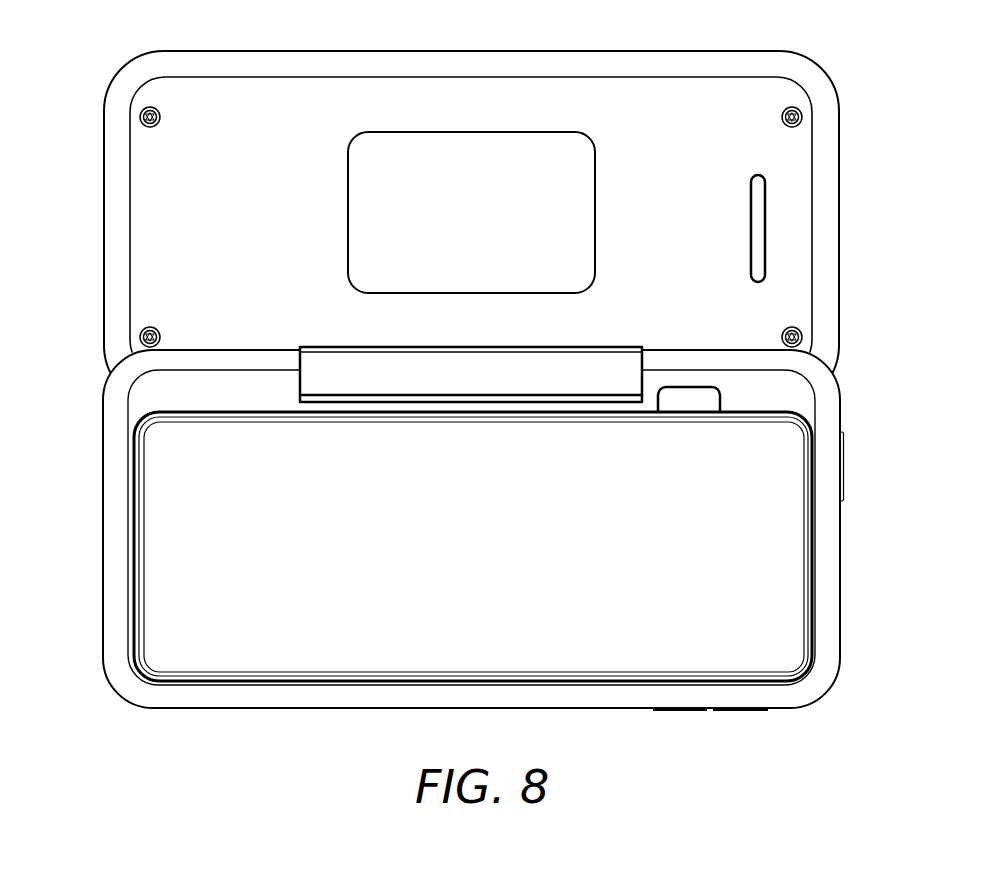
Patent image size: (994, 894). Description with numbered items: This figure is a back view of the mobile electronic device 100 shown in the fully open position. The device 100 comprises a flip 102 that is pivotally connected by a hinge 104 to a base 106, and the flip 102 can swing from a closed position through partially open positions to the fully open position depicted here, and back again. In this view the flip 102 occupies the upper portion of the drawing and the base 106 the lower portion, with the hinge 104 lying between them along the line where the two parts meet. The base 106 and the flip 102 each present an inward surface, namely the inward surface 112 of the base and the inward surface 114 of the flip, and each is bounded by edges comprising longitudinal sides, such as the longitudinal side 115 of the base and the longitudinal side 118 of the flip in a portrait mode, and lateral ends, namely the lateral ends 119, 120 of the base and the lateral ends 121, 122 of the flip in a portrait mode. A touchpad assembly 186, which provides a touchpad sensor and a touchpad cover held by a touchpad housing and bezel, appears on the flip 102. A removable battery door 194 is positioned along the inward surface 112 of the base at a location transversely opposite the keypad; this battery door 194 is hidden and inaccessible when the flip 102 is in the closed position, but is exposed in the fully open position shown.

The mobile electronic device 100 is at (849, 375).
The flip 102 is at (808, 63).
The hinge 104 is at (568, 362).
The base 106 is at (820, 688).
The inward surface of the base 112 is at (808, 425).
The inward surface of the flip 114 is at (792, 147).
The longitudinal side of the base 115 is at (692, 712).
The longitudinal side of the flip 118 is at (610, 51).
The lateral end of the base 119 is at (841, 527).
The lateral end of the base 120 is at (840, 230).
The lateral end of the flip 121 is at (104, 229).
The lateral end of the flip 122 is at (103, 589).
The touchpad assembly 186 is at (360, 208).
The removable battery door 194 is at (785, 628).